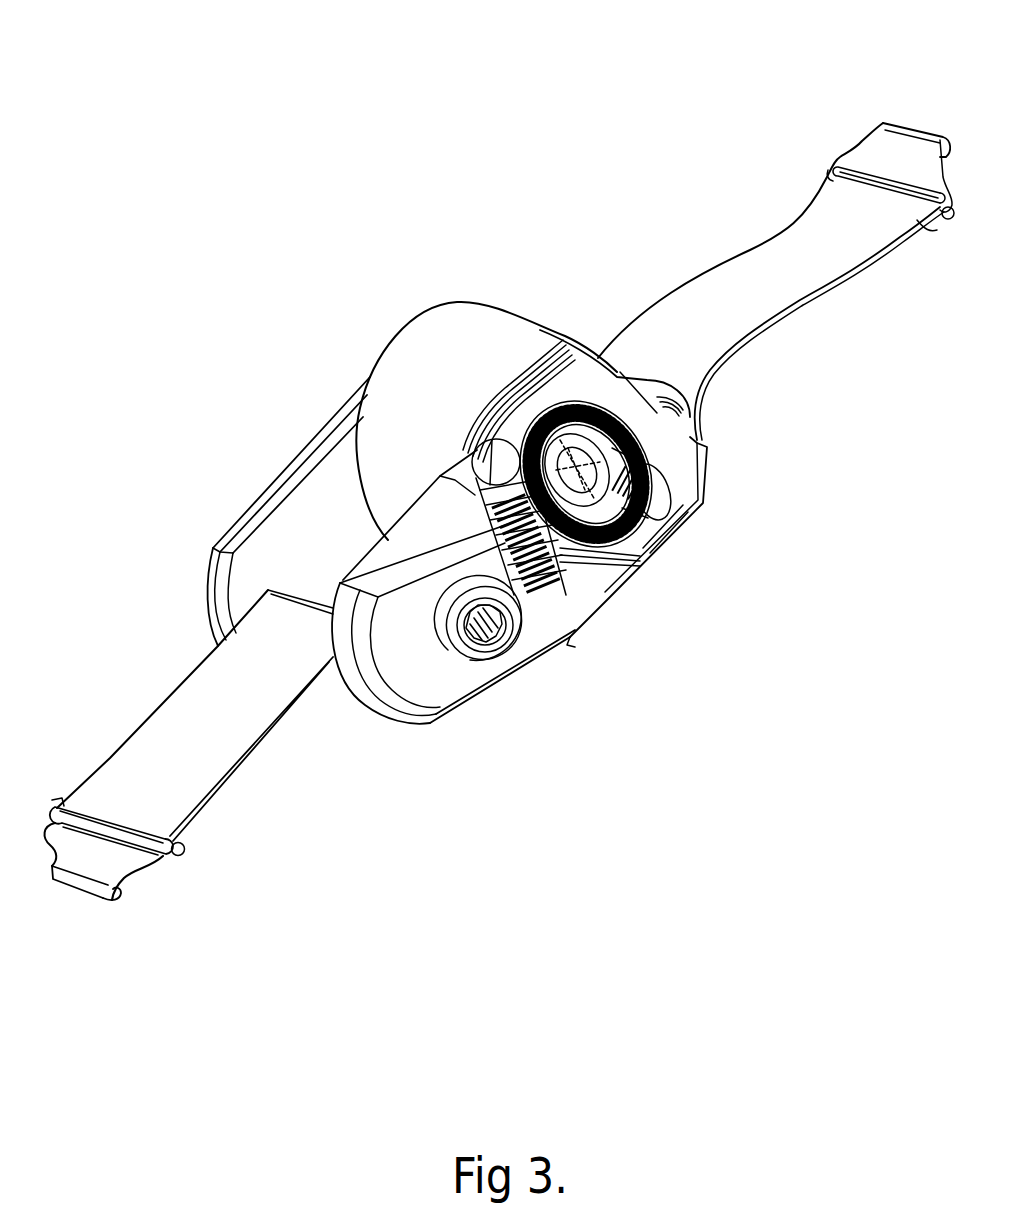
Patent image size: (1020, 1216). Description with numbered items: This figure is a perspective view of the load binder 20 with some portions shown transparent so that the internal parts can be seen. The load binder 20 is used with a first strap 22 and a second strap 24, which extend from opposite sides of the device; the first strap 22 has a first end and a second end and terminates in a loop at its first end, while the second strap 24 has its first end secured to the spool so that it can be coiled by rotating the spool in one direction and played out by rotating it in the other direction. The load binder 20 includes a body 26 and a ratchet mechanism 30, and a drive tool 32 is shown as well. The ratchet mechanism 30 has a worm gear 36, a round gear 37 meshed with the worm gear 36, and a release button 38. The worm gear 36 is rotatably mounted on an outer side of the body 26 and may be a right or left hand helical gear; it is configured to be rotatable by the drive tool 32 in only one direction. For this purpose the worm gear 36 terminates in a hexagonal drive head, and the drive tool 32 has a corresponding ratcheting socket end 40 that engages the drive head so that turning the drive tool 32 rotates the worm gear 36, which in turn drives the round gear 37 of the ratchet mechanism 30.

The load binder 20 is at (825, 101).
The first strap 22 is at (212, 693).
The second strap 24 is at (818, 272).
The body 26 is at (428, 684).
The ratchet mechanism 30 is at (617, 253).
The drive tool 32 is at (590, 584).
The worm gear 36 is at (494, 440).
The round gear 37 is at (574, 405).
The release button 38 is at (653, 483).
The ratcheting socket end 40 is at (517, 623).